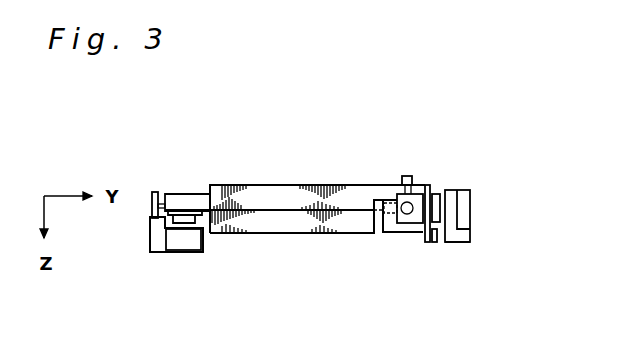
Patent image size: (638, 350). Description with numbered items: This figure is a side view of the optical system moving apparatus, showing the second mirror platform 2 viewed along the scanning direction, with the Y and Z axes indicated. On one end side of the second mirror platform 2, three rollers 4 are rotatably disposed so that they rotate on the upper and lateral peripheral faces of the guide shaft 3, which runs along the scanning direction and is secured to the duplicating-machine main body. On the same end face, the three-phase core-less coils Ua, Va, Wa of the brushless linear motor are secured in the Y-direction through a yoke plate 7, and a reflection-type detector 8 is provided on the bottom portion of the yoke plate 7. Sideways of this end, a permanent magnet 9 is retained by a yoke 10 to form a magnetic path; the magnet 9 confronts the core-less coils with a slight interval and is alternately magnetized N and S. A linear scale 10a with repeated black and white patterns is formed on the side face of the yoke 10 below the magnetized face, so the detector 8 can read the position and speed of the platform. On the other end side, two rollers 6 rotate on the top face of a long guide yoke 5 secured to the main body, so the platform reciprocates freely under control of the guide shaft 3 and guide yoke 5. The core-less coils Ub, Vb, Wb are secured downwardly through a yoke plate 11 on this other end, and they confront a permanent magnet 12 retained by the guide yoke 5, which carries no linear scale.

The second mirror platform 2 is at (300, 185).
The guide shaft 3 is at (405, 232).
The rollers 4 is at (405, 175).
The guide yoke 5 is at (157, 242).
The rollers 6 is at (155, 192).
The yoke plate 7 is at (428, 192).
The detector 8 is at (433, 236).
The permanent magnet 9 is at (448, 194).
The yoke 10 is at (463, 220).
The linear scale 10a is at (441, 239).
The yoke plate 11 is at (190, 193).
The permanent magnet 12 is at (188, 240).